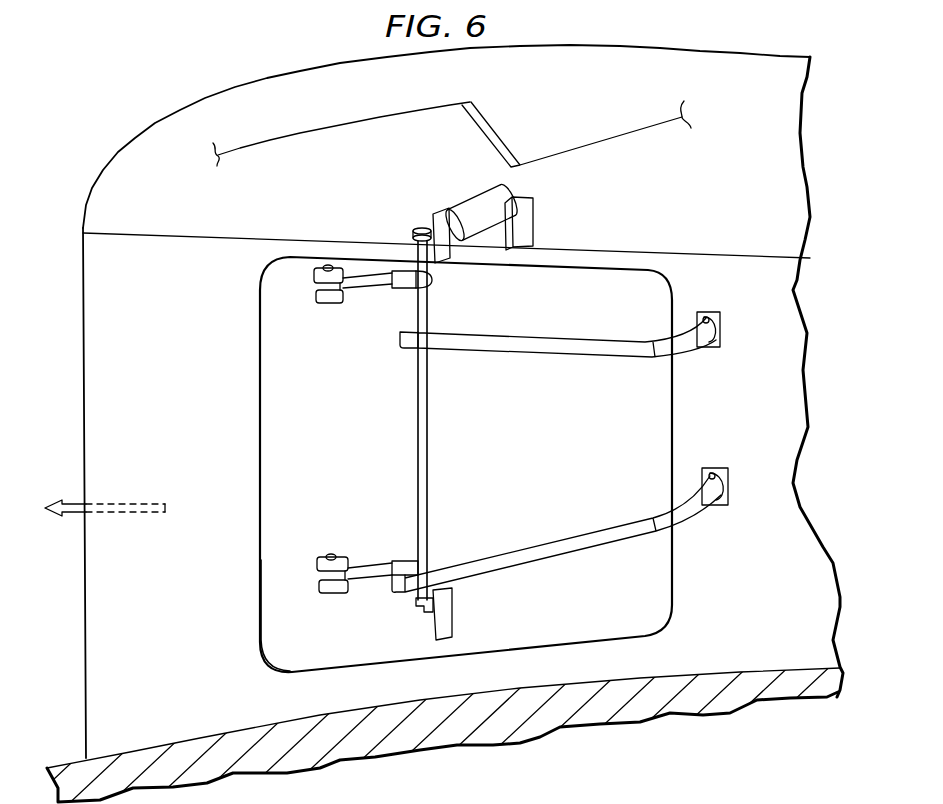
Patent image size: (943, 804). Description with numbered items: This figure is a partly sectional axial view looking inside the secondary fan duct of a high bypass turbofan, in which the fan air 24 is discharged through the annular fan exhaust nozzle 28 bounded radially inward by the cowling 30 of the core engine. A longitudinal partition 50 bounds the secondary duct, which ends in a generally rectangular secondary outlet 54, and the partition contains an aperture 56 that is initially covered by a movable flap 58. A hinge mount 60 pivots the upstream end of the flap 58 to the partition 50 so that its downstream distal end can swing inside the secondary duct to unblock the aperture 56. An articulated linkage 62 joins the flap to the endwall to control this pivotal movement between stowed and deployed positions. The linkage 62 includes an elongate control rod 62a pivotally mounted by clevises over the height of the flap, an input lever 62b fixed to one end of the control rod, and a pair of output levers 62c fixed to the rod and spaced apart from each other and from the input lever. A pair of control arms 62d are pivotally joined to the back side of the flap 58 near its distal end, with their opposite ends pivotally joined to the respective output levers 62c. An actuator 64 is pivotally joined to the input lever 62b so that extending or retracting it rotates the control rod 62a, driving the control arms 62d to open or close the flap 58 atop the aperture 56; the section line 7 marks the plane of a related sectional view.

The fan exhaust nozzle 28 is at (183, 112).
The partition 50 is at (776, 415).
The secondary outlet 54 is at (102, 586).
The cowling 30 is at (72, 762).
The flap 58 is at (351, 458).
The aperture 56 is at (260, 562).
The fan air 24 is at (72, 500).
The section line 7- 7 is at (57, 200).
The hinge mount 60 is at (693, 507).
The articulated linkage 62 is at (552, 223).
The control rod 62a is at (430, 400).
The input lever 62b is at (420, 231).
The output lever 62c is at (412, 284).
The control arm 62d is at (360, 293).
The actuator 64 is at (462, 196).